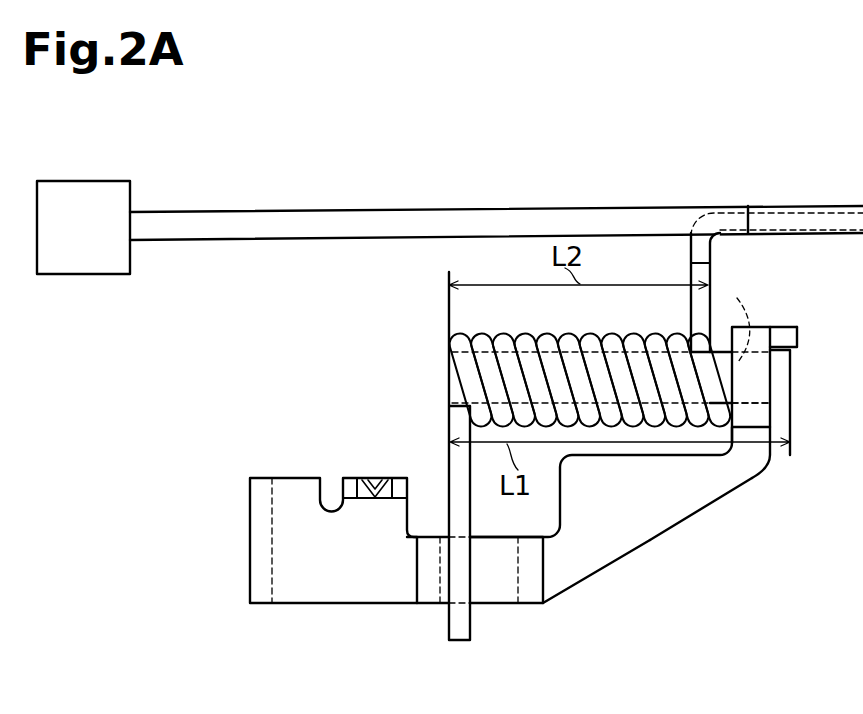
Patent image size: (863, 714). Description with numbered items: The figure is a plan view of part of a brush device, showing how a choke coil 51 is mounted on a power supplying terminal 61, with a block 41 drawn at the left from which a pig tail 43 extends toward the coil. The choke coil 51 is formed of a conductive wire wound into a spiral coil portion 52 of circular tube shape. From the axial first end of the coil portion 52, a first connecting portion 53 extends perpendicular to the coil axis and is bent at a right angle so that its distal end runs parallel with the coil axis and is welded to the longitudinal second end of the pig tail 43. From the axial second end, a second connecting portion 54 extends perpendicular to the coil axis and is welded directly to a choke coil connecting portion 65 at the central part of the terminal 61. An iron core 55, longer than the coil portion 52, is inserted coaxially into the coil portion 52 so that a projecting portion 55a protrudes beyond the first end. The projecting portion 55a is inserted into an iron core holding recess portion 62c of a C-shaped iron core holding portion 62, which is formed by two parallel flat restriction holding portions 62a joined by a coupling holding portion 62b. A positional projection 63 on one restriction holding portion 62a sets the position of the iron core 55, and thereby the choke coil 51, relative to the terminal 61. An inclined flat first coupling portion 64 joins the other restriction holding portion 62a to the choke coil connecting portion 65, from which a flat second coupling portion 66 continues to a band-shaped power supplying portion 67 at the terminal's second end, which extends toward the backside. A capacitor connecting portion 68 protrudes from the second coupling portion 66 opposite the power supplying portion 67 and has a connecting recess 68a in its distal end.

The pump 41 is at (84, 276).
The pig tail 43 is at (242, 218).
The choke coil 51 is at (589, 362).
The coil portion 52 is at (588, 335).
The first connecting portion 53 is at (706, 270).
The second connecting portion 54 is at (460, 645).
The iron core 55 is at (452, 388).
The projecting portion 55a is at (762, 385).
The power supplying terminal 61 is at (633, 553).
The iron core holding portion 62 is at (762, 357).
The restriction holding portion 62a is at (762, 332).
The coupling holding portion 62b is at (790, 392).
The iron core holding recess portion 62c is at (739, 317).
The positional projection 63 is at (797, 327).
The first coupling portion 64 is at (690, 508).
The choke coil connecting portion 65 is at (497, 603).
The second coupling portion 66 is at (376, 605).
The power supplying portion 67 is at (273, 605).
The capacitor connecting portion 68 is at (352, 486).
The connecting recess 68a is at (373, 500).